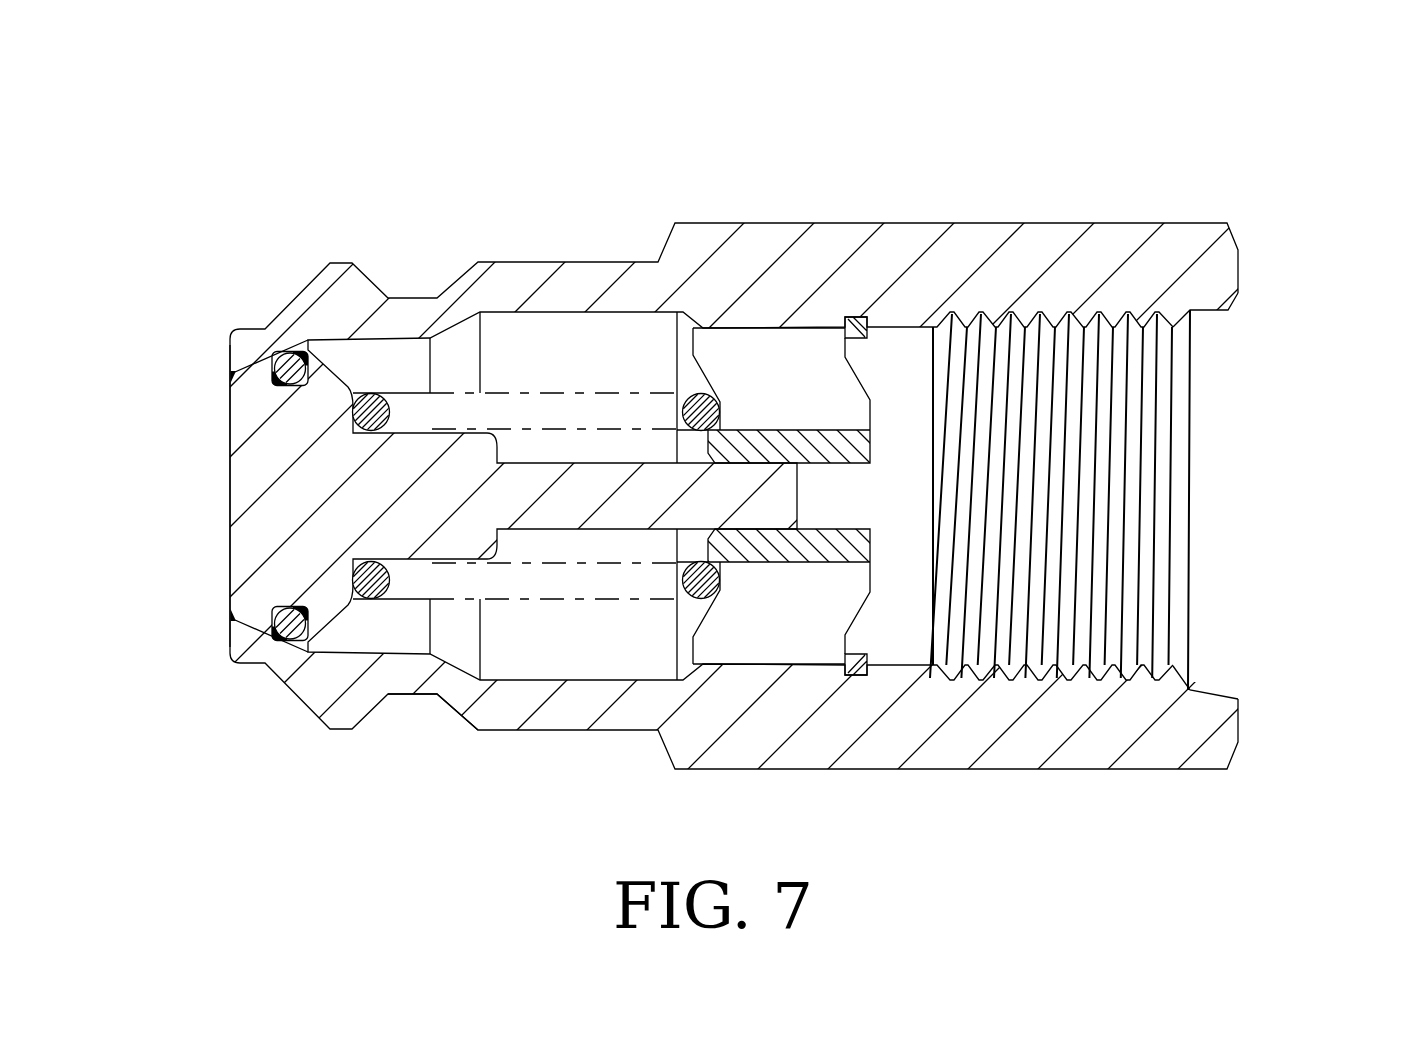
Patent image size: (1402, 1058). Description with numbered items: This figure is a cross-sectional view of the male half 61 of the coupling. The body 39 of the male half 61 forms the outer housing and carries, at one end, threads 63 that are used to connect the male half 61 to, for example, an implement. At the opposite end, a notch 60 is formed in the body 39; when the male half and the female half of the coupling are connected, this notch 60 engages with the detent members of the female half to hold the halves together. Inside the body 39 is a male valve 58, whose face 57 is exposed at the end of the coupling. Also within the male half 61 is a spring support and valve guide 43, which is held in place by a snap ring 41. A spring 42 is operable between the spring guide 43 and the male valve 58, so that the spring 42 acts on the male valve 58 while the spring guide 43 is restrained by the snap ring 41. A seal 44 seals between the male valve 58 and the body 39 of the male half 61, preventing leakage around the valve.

The body 39 is at (833, 272).
The snap ring 41 is at (857, 340).
The spring 42 is at (415, 413).
The spring support and valve guide 43 is at (777, 392).
The seal 44 is at (290, 366).
The face of the male valve 57 is at (228, 493).
The male valve 58 is at (333, 523).
The notch 60 is at (417, 692).
The male half of the coupling 61 is at (701, 454).
The threads 63 is at (1075, 315).